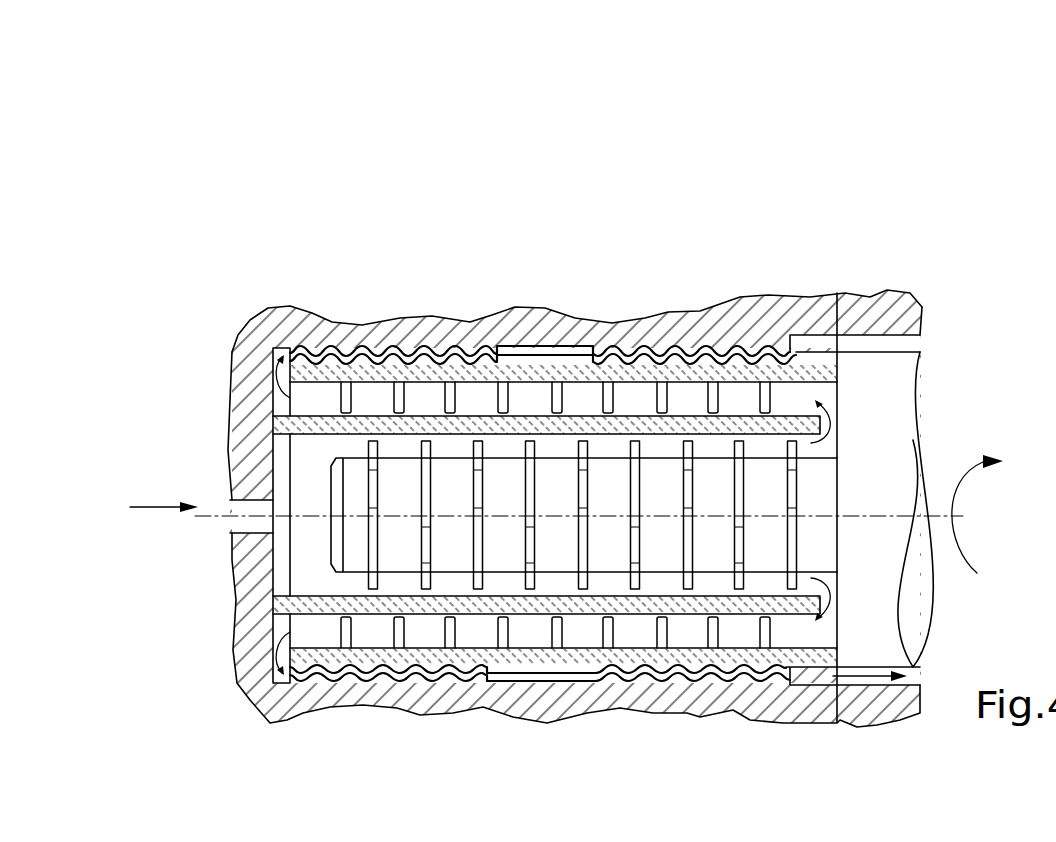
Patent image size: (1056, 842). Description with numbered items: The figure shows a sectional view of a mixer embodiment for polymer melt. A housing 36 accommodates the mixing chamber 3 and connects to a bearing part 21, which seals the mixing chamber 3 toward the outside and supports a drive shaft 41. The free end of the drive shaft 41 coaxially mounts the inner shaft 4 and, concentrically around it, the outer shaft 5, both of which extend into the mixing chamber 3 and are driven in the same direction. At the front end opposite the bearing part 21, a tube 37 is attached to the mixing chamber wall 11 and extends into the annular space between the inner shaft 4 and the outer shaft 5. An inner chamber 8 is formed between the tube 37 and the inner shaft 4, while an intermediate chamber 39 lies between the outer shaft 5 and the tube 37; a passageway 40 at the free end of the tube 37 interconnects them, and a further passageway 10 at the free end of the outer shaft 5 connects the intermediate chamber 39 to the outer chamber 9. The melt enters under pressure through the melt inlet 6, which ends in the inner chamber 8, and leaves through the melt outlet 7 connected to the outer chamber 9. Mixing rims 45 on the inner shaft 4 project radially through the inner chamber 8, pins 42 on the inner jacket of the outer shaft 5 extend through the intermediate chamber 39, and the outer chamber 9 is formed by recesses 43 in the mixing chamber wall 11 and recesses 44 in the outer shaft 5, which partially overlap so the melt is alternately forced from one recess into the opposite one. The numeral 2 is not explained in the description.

The outlet channel 2 is at (813, 677).
The mixing chamber 3 is at (280, 545).
The inner shaft 4 is at (607, 548).
The outer shaft 5 is at (708, 372).
The melt inlet 6 is at (248, 510).
The melt outlet 7 is at (817, 343).
The inner chamber 8 is at (490, 445).
The outer chamber 9 is at (435, 365).
The passageway 10 is at (275, 362).
The mixing chamber wall 11 is at (330, 349).
The bearing part 21 is at (893, 307).
The housing 36 is at (360, 337).
The tube 37 is at (285, 424).
The intermediate chamber 39 is at (418, 397).
The passageway 40 is at (836, 420).
The drive shaft 41 is at (892, 468).
The pins 42 is at (610, 395).
The recesses 43 is at (765, 352).
The recesses 44 is at (697, 360).
The mixing rims 45 is at (530, 577).